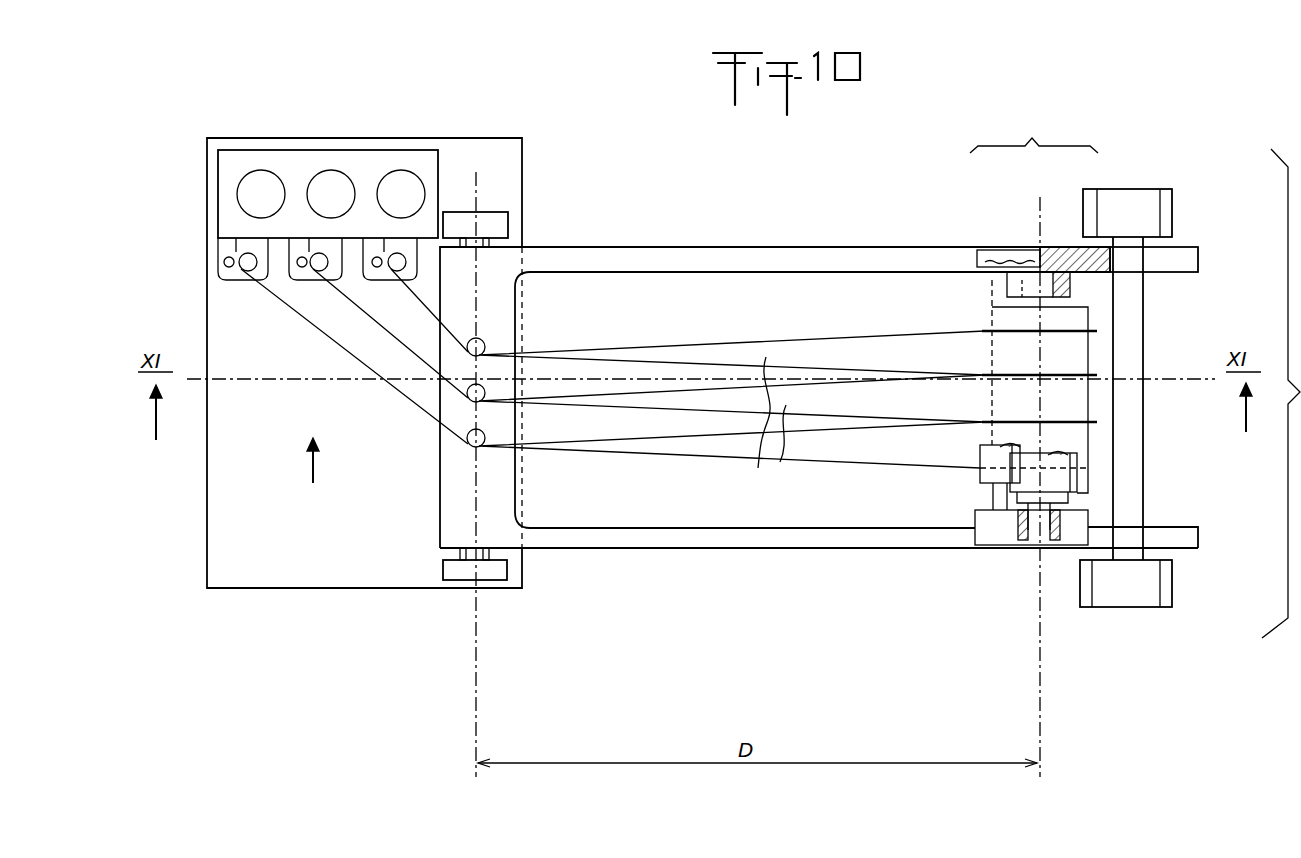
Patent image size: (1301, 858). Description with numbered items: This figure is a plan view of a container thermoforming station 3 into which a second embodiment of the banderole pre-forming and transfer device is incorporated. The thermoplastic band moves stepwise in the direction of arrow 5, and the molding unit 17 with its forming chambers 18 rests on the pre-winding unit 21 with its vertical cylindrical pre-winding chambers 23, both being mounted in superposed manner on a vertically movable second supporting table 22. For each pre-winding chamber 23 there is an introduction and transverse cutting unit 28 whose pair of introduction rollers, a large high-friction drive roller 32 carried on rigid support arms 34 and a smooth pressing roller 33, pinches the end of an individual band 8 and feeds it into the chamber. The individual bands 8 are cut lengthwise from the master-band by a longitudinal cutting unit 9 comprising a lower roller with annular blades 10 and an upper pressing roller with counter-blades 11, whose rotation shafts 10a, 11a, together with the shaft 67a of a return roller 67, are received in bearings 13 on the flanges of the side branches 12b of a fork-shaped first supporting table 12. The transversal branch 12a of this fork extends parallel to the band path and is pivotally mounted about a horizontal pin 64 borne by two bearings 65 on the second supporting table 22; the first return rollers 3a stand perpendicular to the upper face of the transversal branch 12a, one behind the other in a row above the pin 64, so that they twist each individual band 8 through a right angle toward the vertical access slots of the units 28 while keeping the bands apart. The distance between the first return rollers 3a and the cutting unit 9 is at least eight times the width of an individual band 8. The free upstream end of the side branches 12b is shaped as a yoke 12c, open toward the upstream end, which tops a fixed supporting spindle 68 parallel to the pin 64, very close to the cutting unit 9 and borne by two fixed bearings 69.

The thermoforming station 3 is at (299, 172).
The first return roller 3a is at (487, 346).
The arrow 5 is at (321, 460).
The individual bands 8 is at (790, 447).
The longitudinal cutting unit 9 is at (1034, 134).
The blade roller 10 is at (992, 318).
The rotation shaft 10a is at (1023, 299).
The pressing roller with counter-blades 11 is at (1067, 482).
The rotation shaft 11a is at (1032, 532).
The first supporting table 12 is at (817, 401).
The transversal branch 12a is at (445, 450).
The side branches 12b is at (788, 262).
The yoke 12c is at (1190, 250).
The bearings 13 is at (1020, 296).
The molding unit 17 is at (261, 134).
The pre-winding unit 21 is at (243, 162).
The forming chambers 18 is at (331, 162).
The pre-winding chambers 23 is at (264, 190).
The second supporting table 22 is at (480, 147).
The introduction and transverse cutting unit 28 is at (291, 285).
The drive roller 32 is at (263, 272).
The pressing roller 33 is at (228, 267).
The support arms 34 is at (340, 272).
The horizontal pin 64 is at (507, 242).
The bearings 65 is at (498, 222).
The return roller 67 is at (995, 462).
The shaft 67a is at (1000, 497).
The fixed supporting spindle 68 is at (1143, 302).
The fixed bearings 69 is at (1133, 196).